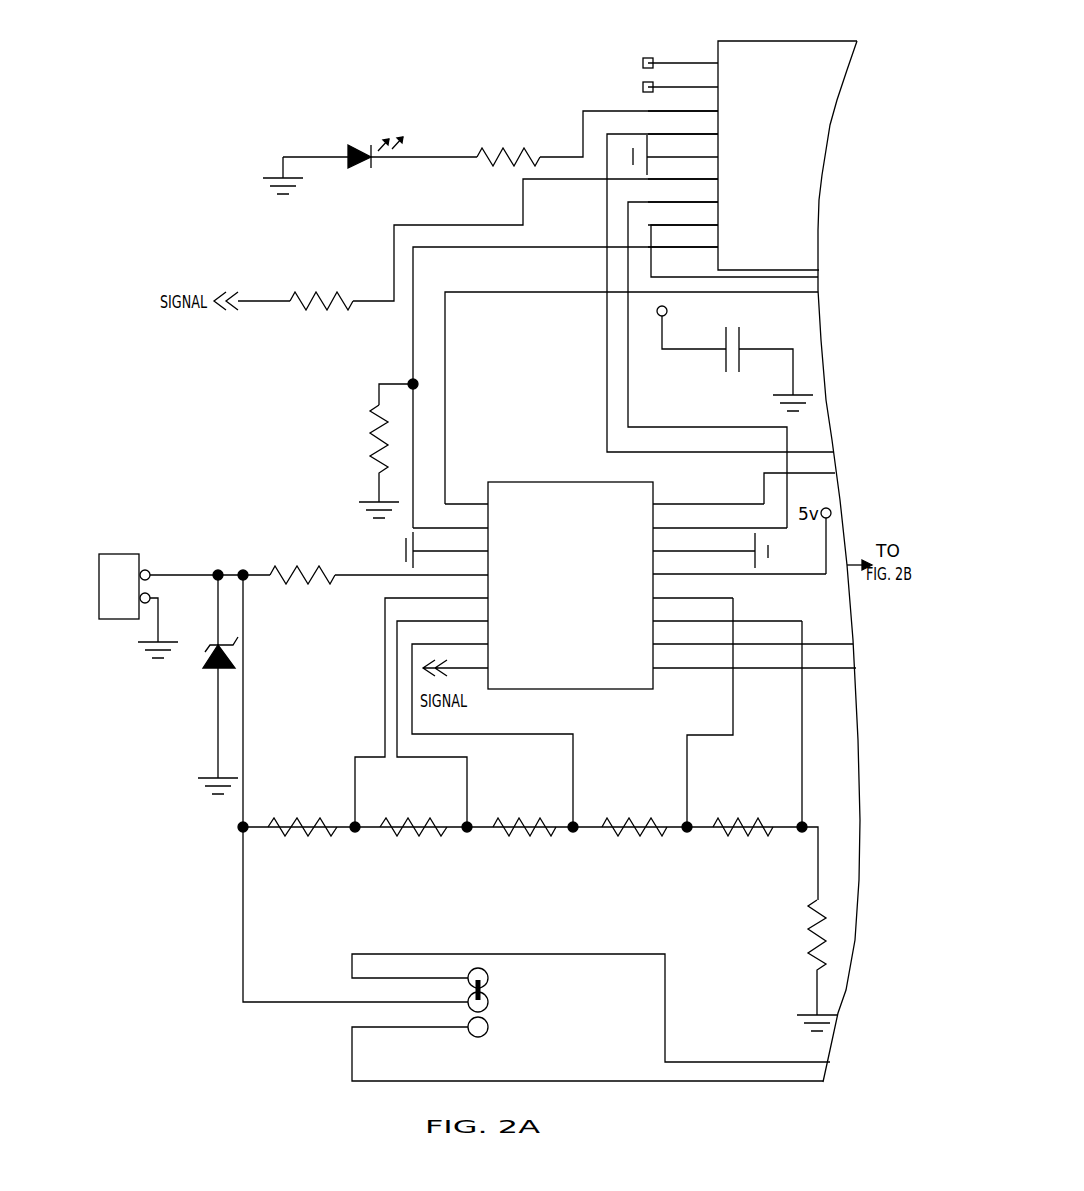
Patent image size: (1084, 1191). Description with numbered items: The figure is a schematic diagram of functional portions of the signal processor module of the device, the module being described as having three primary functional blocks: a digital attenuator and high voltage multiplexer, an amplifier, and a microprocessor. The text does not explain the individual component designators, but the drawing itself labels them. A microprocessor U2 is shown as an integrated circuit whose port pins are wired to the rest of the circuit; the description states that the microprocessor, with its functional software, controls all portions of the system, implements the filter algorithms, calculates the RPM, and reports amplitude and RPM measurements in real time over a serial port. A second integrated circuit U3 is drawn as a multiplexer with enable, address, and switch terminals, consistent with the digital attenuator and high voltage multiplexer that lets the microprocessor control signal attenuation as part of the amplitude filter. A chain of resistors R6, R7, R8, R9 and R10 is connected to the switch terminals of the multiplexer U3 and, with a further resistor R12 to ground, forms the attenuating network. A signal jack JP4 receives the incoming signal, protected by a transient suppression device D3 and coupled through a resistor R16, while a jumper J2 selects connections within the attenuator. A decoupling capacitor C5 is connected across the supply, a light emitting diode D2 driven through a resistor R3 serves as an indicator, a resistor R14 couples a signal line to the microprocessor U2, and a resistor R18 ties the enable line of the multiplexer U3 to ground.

The microcontroller U2 is at (745, 143).
The analog multiplexer U3 is at (631, 570).
The 0.1uF ceramic capacitor C5 is at (724, 359).
The green LED D2 is at (370, 175).
The varistor TVS diode D3 is at (170, 689).
The 470 ohm resistor R3 is at (490, 162).
The resistor R14 is at (323, 289).
The 1k resistor R16 is at (317, 592).
The 10k resistor R18 is at (343, 435).
The 470 ohm resistor R6 is at (312, 842).
The 470 ohm resistor R7 is at (371, 866).
The 470 ohm resistor R8 is at (502, 842).
The 470 ohm resistor R9 is at (596, 865).
The 470 ohm resistor R10 is at (725, 841).
The 200 ohm resistor R12 is at (763, 949).
The jumper J2 is at (591, 1017).
The RA BNC jack JP4 is at (177, 561).